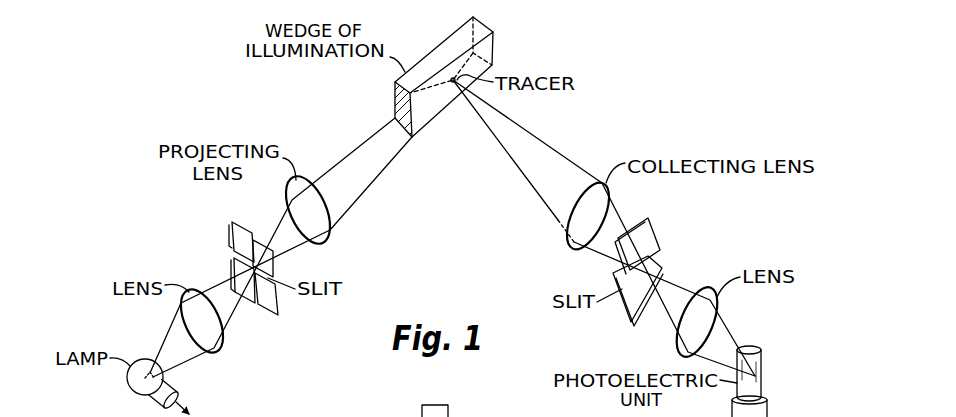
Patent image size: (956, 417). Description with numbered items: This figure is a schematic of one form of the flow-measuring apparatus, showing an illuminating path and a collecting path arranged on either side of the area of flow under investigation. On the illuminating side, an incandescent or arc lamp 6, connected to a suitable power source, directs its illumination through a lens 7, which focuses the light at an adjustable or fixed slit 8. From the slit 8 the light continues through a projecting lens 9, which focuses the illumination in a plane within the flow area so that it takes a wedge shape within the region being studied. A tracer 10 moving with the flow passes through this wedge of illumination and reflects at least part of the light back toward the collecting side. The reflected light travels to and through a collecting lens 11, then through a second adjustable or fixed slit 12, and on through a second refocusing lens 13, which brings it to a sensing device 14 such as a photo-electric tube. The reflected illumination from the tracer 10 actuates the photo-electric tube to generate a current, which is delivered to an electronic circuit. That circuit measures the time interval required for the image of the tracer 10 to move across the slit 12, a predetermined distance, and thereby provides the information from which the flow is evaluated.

The lamp 6 is at (140, 391).
The lens 7 is at (224, 350).
The slit 8 is at (228, 236).
The projecting lens 9 is at (330, 237).
The tracer 10 is at (455, 85).
The collecting lens 11 is at (568, 238).
The slit 12 is at (652, 240).
The second refocusing lens 13 is at (680, 344).
The sensing device 14 is at (764, 384).